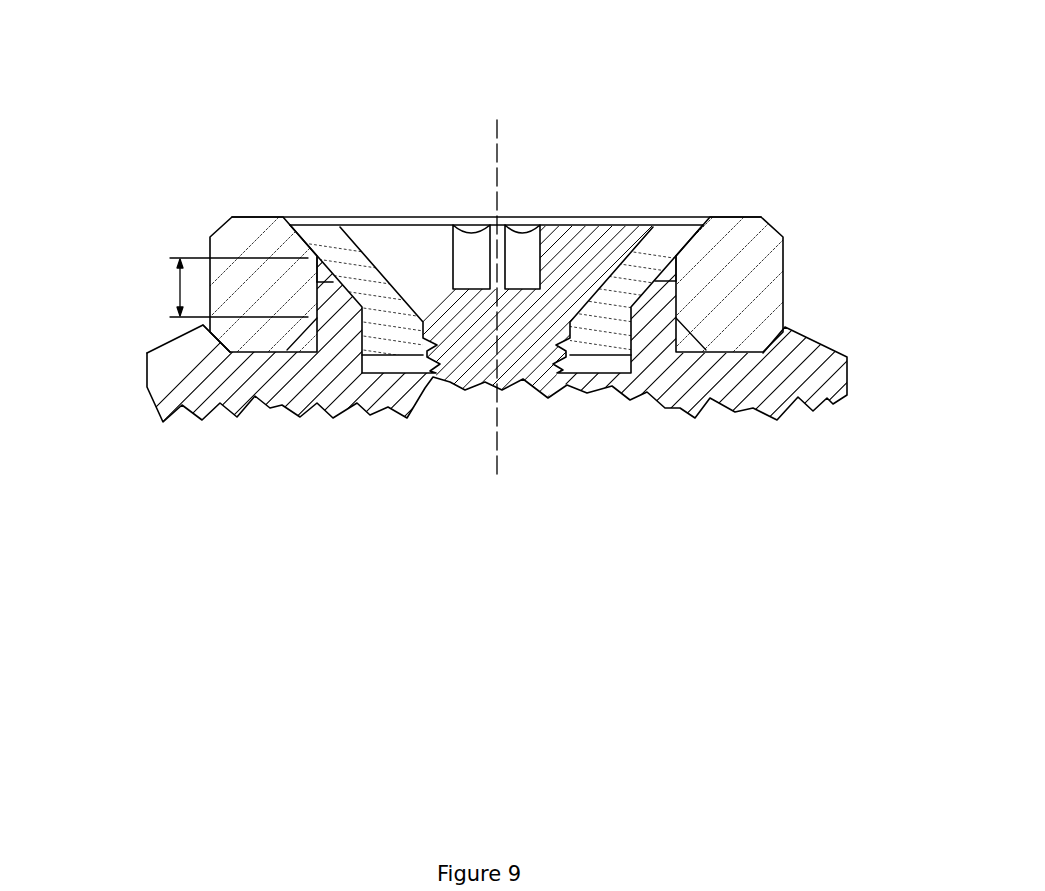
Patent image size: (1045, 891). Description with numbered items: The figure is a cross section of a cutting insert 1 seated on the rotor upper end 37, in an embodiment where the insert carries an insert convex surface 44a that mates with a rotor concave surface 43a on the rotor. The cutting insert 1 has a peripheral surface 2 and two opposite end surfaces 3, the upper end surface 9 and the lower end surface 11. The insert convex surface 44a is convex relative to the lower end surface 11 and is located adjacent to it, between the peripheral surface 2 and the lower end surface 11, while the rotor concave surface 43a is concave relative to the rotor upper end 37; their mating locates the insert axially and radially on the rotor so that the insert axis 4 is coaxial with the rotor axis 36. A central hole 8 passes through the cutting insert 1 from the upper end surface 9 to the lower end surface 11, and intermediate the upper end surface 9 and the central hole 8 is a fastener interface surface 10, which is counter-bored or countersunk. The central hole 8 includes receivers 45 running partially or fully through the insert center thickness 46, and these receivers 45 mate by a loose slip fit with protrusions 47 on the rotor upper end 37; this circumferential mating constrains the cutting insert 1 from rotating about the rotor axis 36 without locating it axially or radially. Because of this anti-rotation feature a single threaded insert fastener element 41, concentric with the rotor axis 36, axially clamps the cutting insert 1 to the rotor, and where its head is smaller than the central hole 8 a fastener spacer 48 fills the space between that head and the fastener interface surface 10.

The cutting insert 1 is at (760, 263).
The peripheral surface 2 is at (210, 250).
The end surface 3 is at (431, 237).
The upper end surface 9 is at (240, 217).
The lower end surface 11 is at (242, 318).
The insert axis 4 is at (557, 300).
The rotor axis 36 is at (497, 418).
The central hole 8 is at (673, 278).
The fastener interface surface 10 is at (676, 240).
The rotor upper end 37 is at (867, 283).
The threaded insert fastener element 41 is at (562, 248).
The rotor concave surface 43a is at (227, 347).
The insert convex surface 44a is at (240, 330).
The receiver 45 is at (321, 295).
The insert center thickness 46 is at (180, 287).
The protrusion 47 is at (330, 275).
The fastener spacer 48 is at (659, 245).